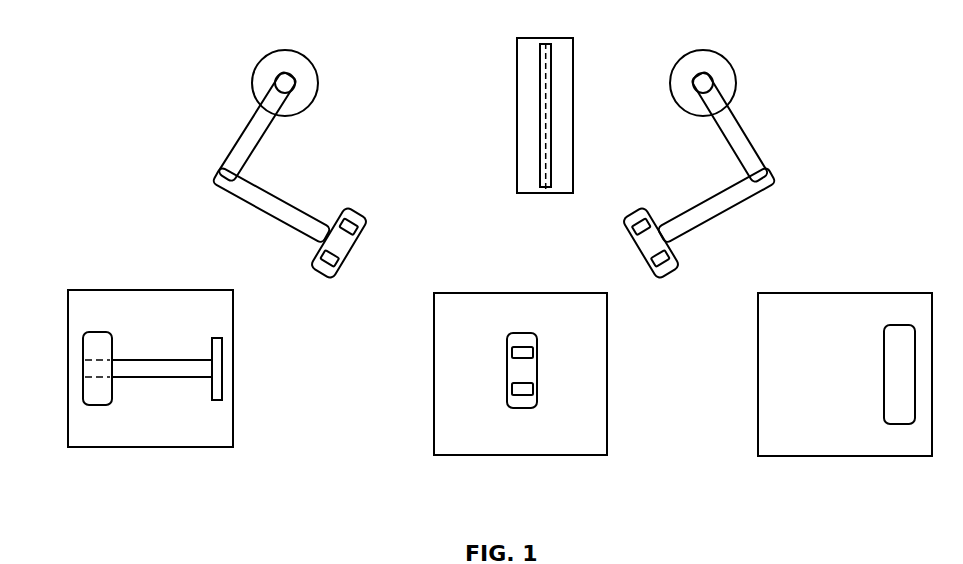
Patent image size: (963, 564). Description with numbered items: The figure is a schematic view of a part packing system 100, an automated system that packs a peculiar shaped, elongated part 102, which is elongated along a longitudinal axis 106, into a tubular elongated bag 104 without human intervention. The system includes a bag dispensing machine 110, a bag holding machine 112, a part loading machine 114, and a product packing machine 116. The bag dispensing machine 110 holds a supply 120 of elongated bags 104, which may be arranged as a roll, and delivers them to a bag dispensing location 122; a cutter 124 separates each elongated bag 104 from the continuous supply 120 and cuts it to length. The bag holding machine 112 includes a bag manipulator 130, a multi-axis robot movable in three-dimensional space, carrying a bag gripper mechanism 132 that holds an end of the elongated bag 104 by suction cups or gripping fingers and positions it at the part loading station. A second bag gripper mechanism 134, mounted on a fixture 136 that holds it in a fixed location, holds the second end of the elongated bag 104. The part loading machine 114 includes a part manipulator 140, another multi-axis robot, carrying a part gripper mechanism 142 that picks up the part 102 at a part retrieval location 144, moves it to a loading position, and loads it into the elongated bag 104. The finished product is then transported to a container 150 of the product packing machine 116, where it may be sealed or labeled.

The part packing system 100 is at (141, 58).
The part 102 is at (552, 102).
The elongated bag 104 is at (155, 358).
The longitudinal axis 106 is at (553, 56).
The bag dispensing machine 110 is at (114, 463).
The bag holding machine 112 is at (250, 70).
The part loading machine 114 is at (753, 88).
The product packing machine 116 is at (845, 466).
The supply 120 is at (85, 390).
The bag dispensing location 122 is at (178, 382).
The cutter 124 is at (215, 386).
The bag manipulator 130 is at (248, 144).
The bag gripper mechanism 132 is at (358, 208).
The second bag gripper mechanism 134 is at (523, 413).
The fixture 136 is at (450, 416).
The part manipulator 140 is at (738, 200).
The part gripper mechanism 142 is at (668, 274).
The part retrieval location 144 is at (511, 80).
The container 150 is at (900, 325).